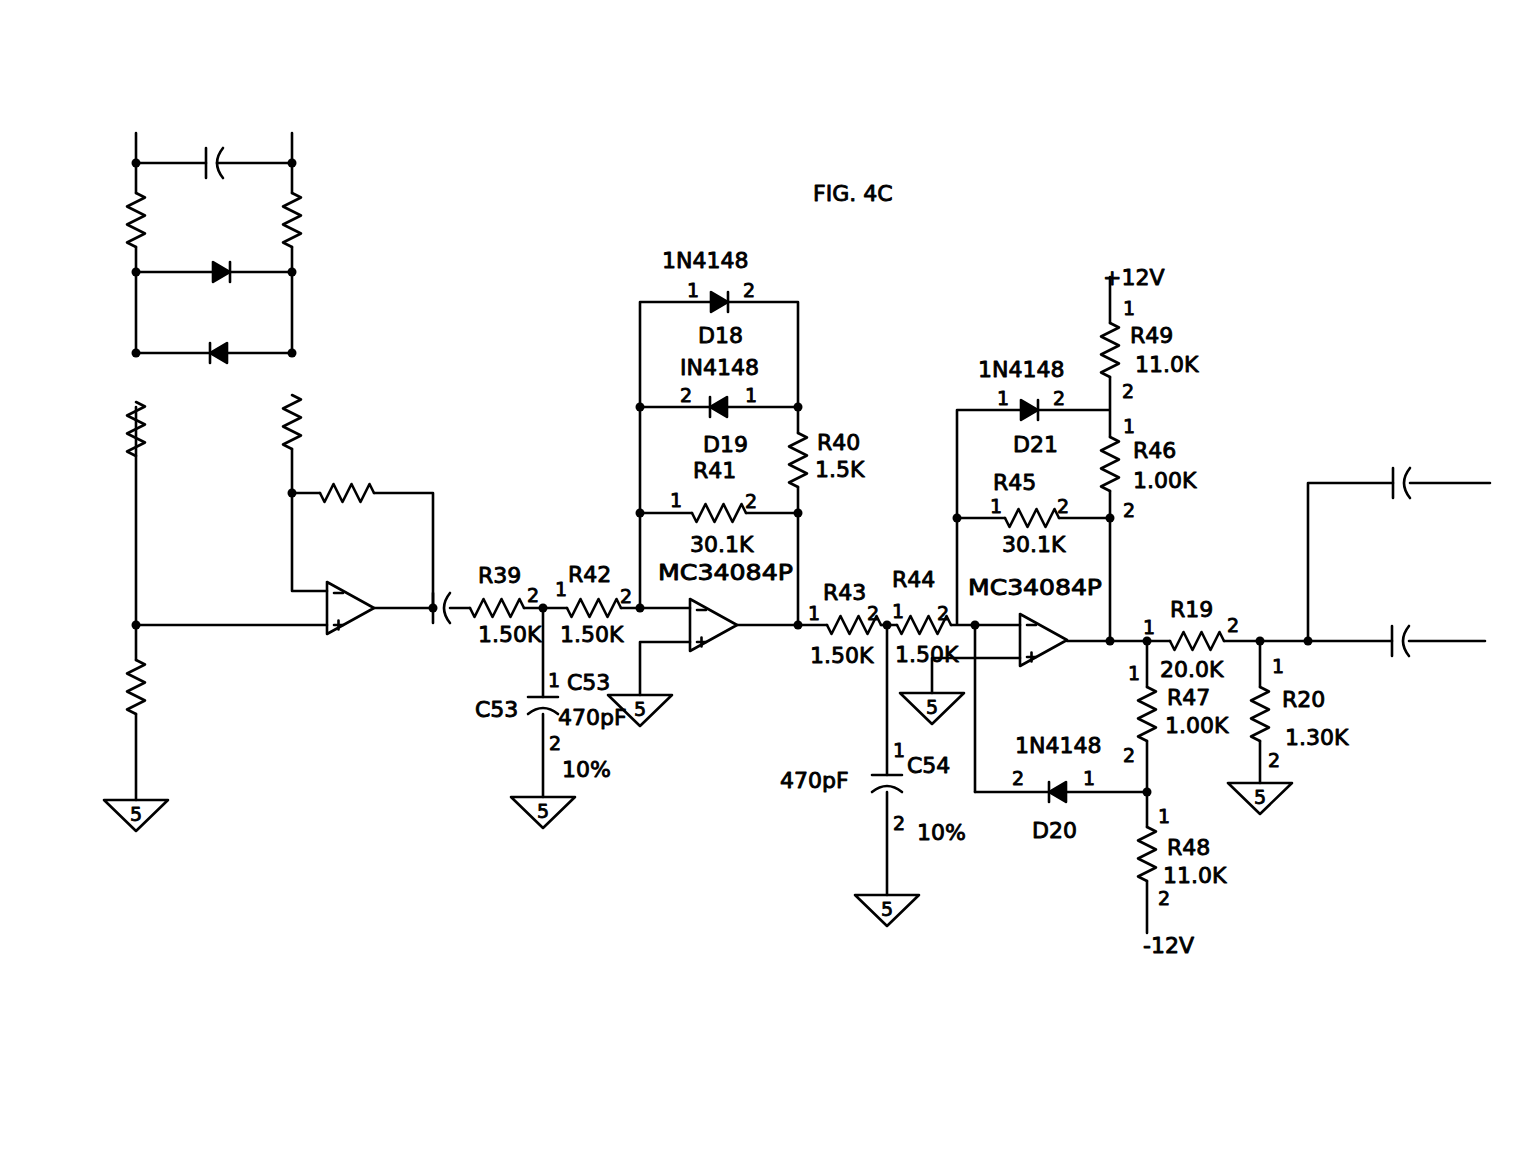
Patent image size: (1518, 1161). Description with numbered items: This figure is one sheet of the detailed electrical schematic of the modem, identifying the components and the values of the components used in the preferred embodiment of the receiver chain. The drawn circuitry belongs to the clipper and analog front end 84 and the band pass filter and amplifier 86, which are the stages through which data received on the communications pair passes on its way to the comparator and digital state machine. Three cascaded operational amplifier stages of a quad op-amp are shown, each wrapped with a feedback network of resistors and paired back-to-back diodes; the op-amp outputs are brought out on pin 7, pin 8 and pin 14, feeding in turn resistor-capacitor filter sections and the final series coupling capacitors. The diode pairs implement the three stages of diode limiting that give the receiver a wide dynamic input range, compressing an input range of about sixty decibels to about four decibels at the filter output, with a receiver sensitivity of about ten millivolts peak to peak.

The clipper and analog front end 84 is at (430, 297).
The band pass filter and amplifier 86 is at (1310, 363).
The op-amp U22 output pin 7 is at (368, 616).
The op-amp U22 output pin 8 is at (738, 633).
The op-amp U22 output pin 14 is at (1077, 645).